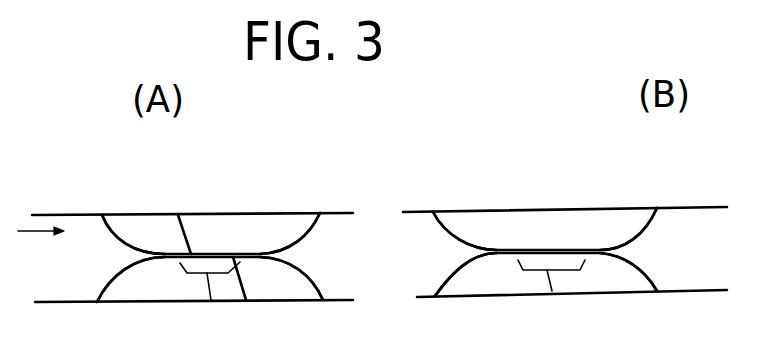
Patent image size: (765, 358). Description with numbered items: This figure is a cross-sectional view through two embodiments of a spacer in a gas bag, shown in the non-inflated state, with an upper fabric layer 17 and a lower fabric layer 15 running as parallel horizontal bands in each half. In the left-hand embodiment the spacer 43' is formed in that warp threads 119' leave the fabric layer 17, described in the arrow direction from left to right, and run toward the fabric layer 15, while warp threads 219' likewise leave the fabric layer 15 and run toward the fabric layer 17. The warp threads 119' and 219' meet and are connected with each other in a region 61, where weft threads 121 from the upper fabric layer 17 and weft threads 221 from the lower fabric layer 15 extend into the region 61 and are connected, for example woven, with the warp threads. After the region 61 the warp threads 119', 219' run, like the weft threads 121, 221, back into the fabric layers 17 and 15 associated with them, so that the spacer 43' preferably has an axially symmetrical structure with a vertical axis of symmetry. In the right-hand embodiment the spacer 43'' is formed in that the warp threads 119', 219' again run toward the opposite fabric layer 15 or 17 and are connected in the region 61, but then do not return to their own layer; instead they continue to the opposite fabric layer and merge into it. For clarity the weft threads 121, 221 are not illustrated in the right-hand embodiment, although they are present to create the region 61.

The fabric layer 15 is at (705, 297).
The fabric layer 17 is at (705, 207).
The spacer 43' is at (210, 211).
The spacer 43'' is at (545, 202).
The region 61 is at (210, 302).
The warp threads 119' is at (383, 219).
The weft threads 121 is at (181, 229).
The warp threads 219' is at (341, 252).
The weft threads 221 is at (247, 285).